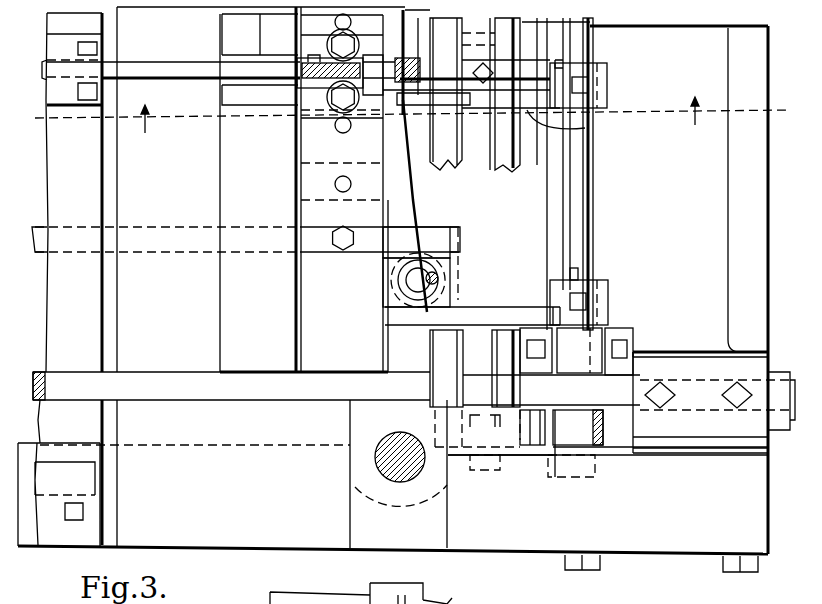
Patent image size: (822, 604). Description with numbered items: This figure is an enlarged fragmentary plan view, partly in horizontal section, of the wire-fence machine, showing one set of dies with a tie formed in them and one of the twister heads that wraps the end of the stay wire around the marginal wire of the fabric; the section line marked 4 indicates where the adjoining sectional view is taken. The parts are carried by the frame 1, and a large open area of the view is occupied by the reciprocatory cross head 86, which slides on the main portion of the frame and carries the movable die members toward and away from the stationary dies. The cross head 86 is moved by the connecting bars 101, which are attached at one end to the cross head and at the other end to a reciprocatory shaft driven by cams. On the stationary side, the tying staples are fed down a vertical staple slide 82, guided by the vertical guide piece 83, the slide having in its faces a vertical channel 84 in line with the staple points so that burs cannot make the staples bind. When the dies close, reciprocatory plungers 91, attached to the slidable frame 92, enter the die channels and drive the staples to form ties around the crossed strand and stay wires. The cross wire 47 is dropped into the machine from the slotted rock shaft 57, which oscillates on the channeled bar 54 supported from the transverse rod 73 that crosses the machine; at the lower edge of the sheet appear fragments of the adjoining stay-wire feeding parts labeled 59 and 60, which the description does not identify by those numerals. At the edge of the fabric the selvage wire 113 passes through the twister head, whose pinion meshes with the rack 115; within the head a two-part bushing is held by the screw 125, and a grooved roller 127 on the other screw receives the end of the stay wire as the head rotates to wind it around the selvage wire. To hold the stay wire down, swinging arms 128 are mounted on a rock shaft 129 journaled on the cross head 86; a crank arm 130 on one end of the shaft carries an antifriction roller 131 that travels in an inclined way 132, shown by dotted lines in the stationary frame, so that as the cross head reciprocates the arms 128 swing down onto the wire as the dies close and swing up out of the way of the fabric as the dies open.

The frame 1 is at (716, 505).
The pinion 4 is at (409, 115).
The cross wire 47 is at (415, 188).
The channeled bar 54 is at (518, 595).
The slotted rock shaft 57 is at (422, 390).
The link 59 is at (450, 600).
The plate 60 is at (327, 600).
The transverse rod 73 is at (505, 173).
The staple slide 82 is at (318, 82).
The vertical guide piece 83 is at (296, 62).
The vertical channel 84 is at (352, 72).
The reciprocatory cross head 86 is at (650, 276).
The reciprocatory plungers 91 is at (160, 66).
The slidable frame 92 is at (184, 279).
The connecting bars 101 is at (336, 388).
The selvage wires 113 is at (405, 288).
The rack 115 is at (117, 230).
The screw 125 is at (402, 278).
The grooved roller 127 is at (440, 272).
The swinging arms 128 is at (590, 137).
The rock shaft 129 is at (570, 252).
The crank arm 130 is at (557, 472).
The antifriction roller 131 is at (493, 455).
The inclined way 132 is at (510, 478).